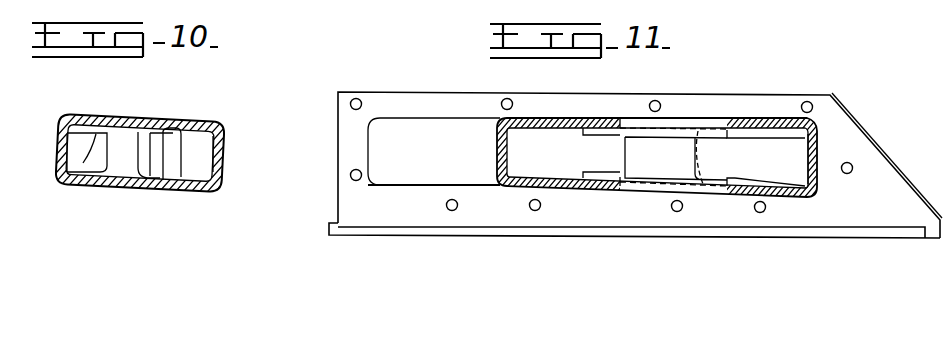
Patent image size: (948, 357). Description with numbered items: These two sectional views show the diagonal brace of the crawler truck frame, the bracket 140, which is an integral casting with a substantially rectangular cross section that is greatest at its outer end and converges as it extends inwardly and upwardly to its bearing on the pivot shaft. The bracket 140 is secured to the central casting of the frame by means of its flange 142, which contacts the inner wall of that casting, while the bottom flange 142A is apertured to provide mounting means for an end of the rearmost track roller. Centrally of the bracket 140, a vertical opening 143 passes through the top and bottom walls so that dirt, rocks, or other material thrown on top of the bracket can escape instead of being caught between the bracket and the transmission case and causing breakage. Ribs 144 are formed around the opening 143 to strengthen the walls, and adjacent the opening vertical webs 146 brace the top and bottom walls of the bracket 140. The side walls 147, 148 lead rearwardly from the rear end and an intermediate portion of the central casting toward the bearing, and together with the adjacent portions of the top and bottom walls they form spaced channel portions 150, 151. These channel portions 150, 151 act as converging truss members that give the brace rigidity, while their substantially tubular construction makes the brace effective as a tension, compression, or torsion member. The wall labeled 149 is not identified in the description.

In FIG. 10, the bracket 140 is at (133, 187).
In FIG. 11, the bracket 140 is at (410, 125).
In FIG. 11, the flange 142 is at (843, 124).
In FIG. 11, the bottom flange 142A is at (678, 233).
In FIG. 11, the vertical opening 143 is at (675, 178).
In FIG. 10, the ribs 144 is at (83, 166).
In FIG. 11, the ribs 144 is at (732, 137).
In FIG. 10, the vertical webs 146 is at (132, 152).
In FIG. 11, the vertical webs 146 is at (632, 152).
In FIG. 10, the side wall 147 is at (223, 163).
In FIG. 11, the side wall 147 is at (818, 172).
In FIG. 11, the side wall 148 is at (502, 153).
In FIG. 10, the side wall of housing 149 is at (57, 137).
In FIG. 11, the channel portion 150 is at (763, 122).
In FIG. 11, the channel portion 151 is at (557, 120).